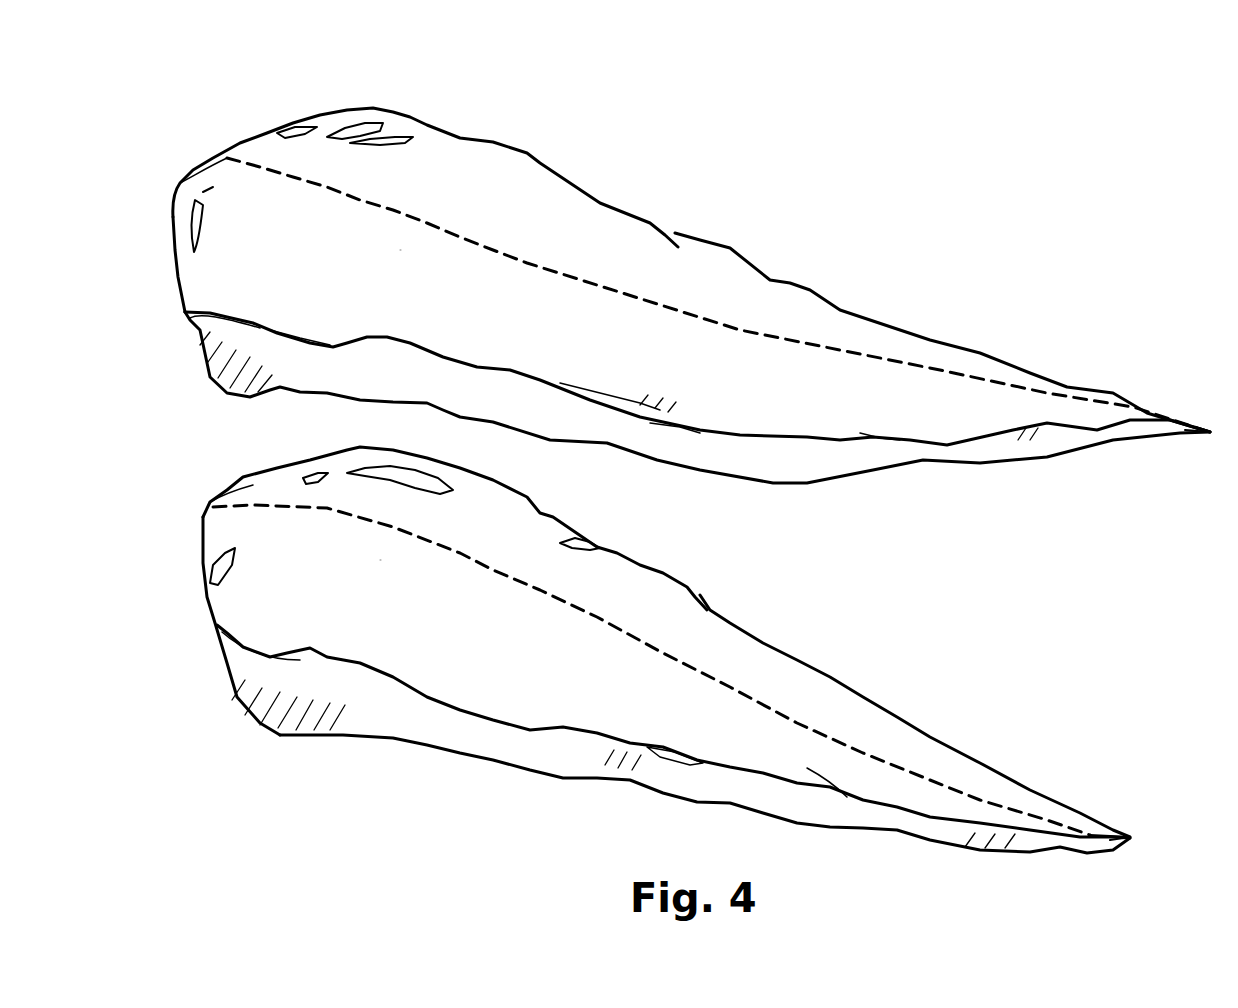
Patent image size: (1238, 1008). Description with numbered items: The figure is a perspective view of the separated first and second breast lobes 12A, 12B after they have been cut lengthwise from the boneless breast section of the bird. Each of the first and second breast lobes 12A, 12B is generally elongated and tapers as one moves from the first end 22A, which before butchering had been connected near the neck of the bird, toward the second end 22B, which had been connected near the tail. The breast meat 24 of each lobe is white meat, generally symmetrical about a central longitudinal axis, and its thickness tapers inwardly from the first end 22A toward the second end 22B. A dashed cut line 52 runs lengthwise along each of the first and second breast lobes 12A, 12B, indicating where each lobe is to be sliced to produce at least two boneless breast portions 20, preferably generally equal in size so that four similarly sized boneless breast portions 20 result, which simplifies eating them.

The first breast lobe 12A is at (468, 160).
The second breast lobe 12B is at (640, 568).
The boneless breast portion 20 is at (647, 245).
The first end 22A is at (220, 177).
The second end 22B is at (1125, 403).
The breast meat 24 is at (494, 314).
The fold line 52 is at (540, 257).